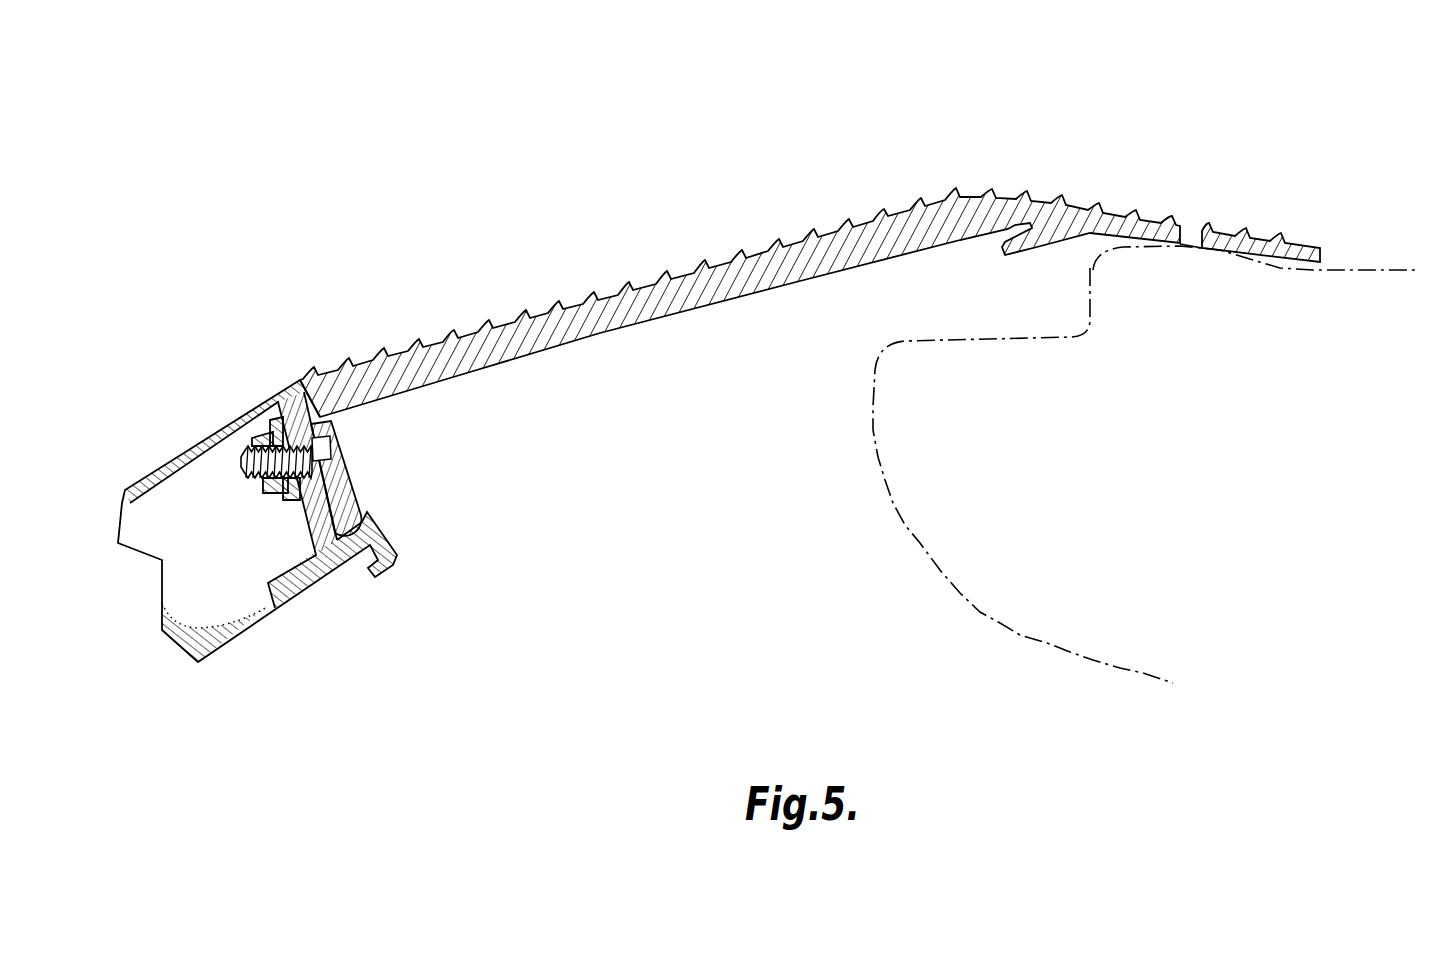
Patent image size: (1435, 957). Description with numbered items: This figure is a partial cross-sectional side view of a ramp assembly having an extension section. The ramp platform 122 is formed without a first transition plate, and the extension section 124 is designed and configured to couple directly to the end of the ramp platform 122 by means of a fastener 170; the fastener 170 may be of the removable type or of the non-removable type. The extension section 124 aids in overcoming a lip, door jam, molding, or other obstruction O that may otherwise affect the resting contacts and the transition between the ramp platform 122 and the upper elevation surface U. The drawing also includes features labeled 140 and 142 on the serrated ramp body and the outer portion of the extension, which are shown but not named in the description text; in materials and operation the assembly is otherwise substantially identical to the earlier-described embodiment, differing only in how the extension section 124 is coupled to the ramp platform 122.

The ramp platform 122 is at (210, 430).
The extension section 124 is at (810, 271).
The ramp plate with serrations 140 is at (618, 298).
The lip plate 142 is at (1145, 225).
The fastener 170 is at (340, 447).
The obstruction O is at (1090, 282).
The upper elevation surface U is at (1347, 270).